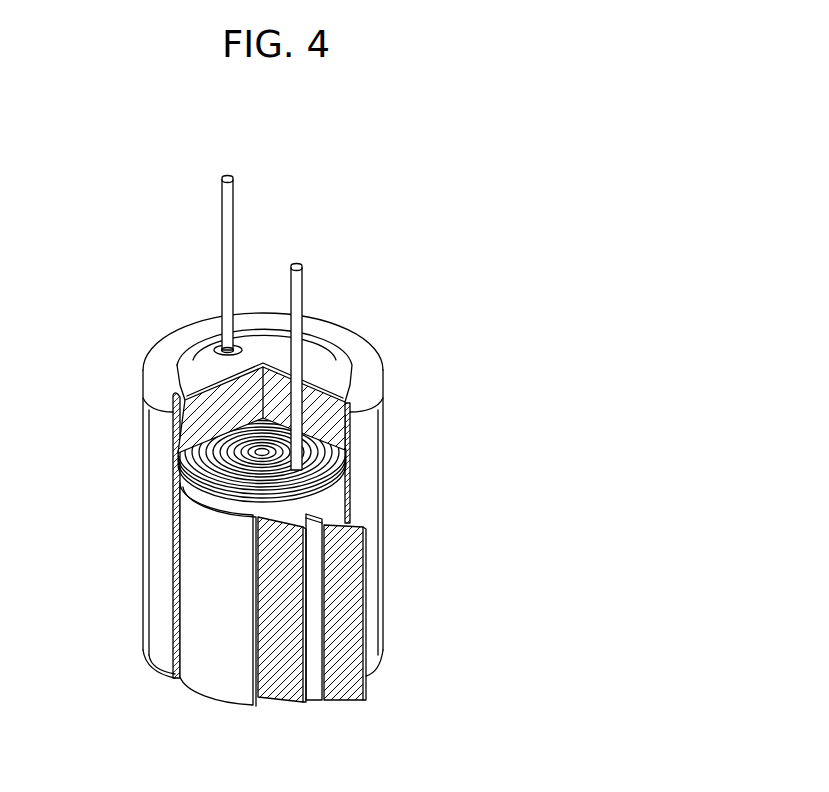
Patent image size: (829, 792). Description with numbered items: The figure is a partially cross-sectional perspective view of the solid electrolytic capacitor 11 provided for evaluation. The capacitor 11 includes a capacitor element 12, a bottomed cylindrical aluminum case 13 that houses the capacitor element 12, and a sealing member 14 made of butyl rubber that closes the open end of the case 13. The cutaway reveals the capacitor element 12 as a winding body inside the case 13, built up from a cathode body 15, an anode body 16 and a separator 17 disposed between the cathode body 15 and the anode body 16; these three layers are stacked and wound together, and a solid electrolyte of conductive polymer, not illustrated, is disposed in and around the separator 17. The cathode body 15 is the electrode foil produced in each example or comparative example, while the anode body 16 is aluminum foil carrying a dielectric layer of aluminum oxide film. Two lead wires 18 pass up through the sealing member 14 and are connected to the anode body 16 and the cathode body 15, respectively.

The solid electrolytic capacitor 11 is at (432, 237).
The capacitor element 12 is at (325, 502).
The bottomed cylindrical aluminum case 13 is at (160, 523).
The sealing member 14 is at (203, 417).
The cathode body 15 is at (348, 685).
The anode body 16 is at (280, 688).
The separator 17 is at (210, 675).
The lead wires 18 is at (228, 237).